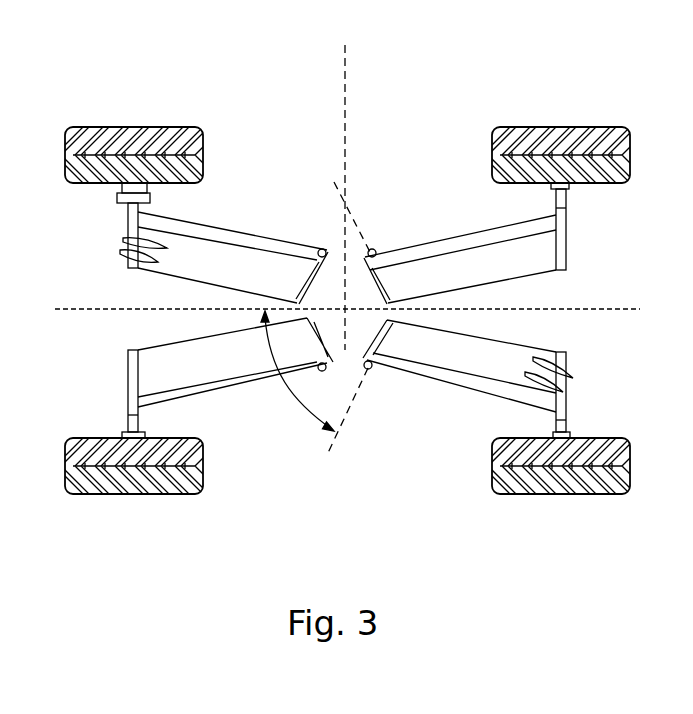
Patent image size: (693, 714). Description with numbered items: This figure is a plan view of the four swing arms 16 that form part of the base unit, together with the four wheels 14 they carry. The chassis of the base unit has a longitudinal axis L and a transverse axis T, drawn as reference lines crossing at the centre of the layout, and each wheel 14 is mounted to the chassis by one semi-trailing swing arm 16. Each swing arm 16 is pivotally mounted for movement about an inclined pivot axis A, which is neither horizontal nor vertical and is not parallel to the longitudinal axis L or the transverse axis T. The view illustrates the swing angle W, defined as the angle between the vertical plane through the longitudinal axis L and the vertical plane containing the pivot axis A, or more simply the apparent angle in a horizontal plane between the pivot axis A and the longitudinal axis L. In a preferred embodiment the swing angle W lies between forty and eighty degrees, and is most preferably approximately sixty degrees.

The wheel 14 is at (163, 127).
The swing arm 16 is at (245, 247).
The transverse axis T is at (345, 112).
The longitudinal axis L is at (600, 307).
The swing angle W is at (293, 398).
The pivot axis A is at (353, 397).